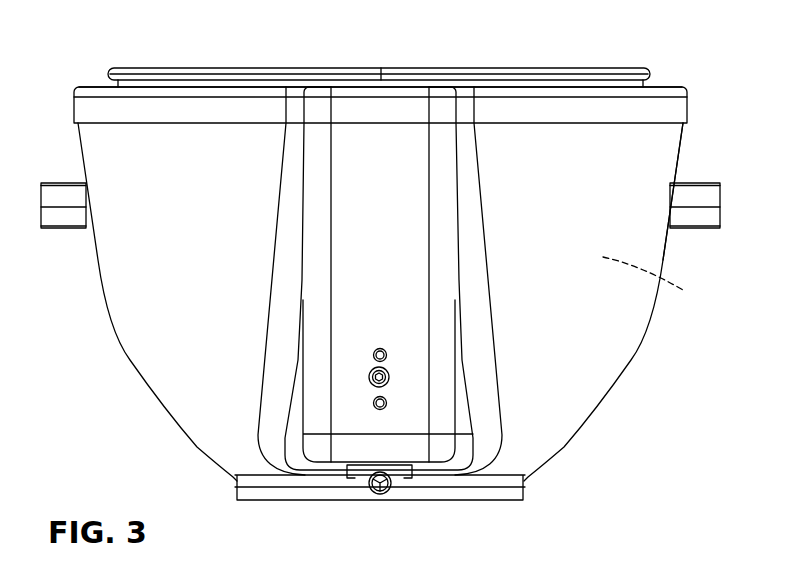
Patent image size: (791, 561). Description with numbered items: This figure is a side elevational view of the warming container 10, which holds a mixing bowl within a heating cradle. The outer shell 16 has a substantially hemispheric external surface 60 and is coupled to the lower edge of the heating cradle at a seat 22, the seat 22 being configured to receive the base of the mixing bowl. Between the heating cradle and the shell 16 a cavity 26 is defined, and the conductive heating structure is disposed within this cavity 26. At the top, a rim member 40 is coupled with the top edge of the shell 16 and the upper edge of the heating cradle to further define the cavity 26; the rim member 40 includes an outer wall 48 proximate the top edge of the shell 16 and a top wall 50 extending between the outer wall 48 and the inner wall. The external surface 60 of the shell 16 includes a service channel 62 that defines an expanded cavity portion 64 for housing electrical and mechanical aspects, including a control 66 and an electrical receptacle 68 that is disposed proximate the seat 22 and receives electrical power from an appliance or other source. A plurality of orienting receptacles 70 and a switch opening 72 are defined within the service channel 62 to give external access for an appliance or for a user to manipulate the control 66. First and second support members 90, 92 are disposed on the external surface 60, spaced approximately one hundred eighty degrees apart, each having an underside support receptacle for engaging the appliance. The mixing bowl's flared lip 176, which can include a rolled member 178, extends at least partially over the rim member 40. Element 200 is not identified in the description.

The warming container 10 is at (86, 387).
The shell 16 is at (657, 329).
The seat 22 is at (272, 492).
The cavity 26 is at (657, 281).
The rim member 40 is at (703, 93).
The outer wall 48 is at (95, 87).
The top wall 50 is at (97, 103).
The external surface 60 is at (622, 222).
The service channel 62 is at (358, 147).
The expanded cavity portion 64 is at (392, 158).
The control 66 is at (372, 387).
The electrical receptacle 68 is at (392, 494).
The orienting receptacles 70 is at (373, 355).
The switch opening 72 is at (369, 377).
The first support member 90 is at (690, 197).
The second support member 92 is at (65, 192).
The flared lip 176 is at (157, 68).
The rolled member 178 is at (647, 70).
The lower roller 200 is at (388, 385).